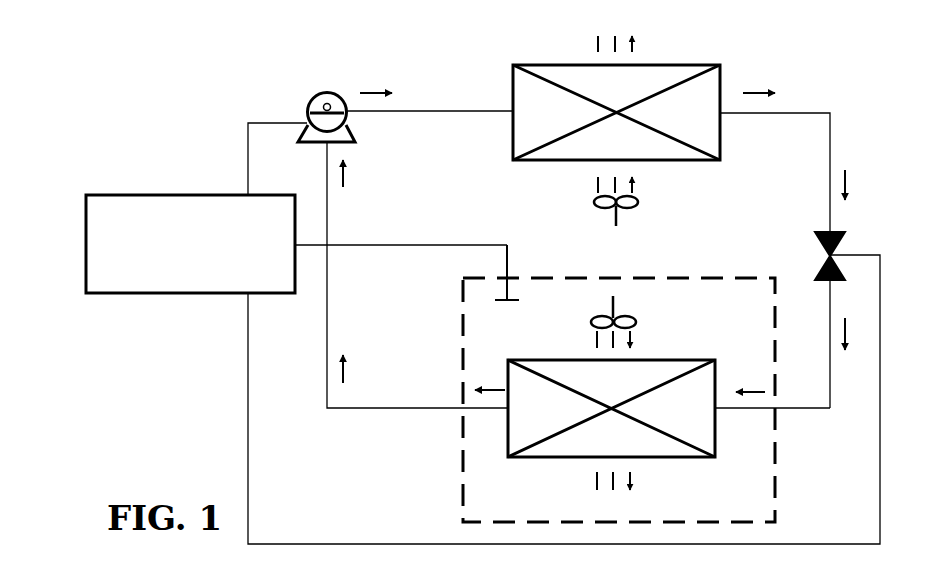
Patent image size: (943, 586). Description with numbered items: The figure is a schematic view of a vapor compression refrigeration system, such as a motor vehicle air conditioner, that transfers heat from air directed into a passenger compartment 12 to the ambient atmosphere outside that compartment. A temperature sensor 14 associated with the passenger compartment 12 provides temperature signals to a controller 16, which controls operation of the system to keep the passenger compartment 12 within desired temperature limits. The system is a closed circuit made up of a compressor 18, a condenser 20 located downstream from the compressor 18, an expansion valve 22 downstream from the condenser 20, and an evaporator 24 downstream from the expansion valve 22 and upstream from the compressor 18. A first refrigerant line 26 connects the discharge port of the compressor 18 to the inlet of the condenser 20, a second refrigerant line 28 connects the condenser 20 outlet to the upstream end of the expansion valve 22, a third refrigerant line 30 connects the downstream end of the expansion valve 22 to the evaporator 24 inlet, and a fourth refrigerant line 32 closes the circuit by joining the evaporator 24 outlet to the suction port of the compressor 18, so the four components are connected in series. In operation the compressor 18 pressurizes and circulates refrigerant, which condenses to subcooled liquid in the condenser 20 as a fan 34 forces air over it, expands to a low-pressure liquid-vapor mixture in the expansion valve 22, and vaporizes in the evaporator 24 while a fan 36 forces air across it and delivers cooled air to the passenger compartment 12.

The passenger compartment 12 is at (750, 510).
The temperature sensor 14 is at (497, 293).
The controller 16 is at (171, 195).
The compressor 18 is at (309, 103).
The condenser 20 is at (512, 85).
The expansion valve 22 is at (822, 252).
The evaporator 24 is at (670, 360).
The first refrigerant line 26 is at (415, 112).
The second refrigerant line 28 is at (752, 116).
The third refrigerant line 30 is at (787, 412).
The fourth refrigerant line 32 is at (400, 408).
The fan 34 is at (616, 218).
The fan 36 is at (600, 303).